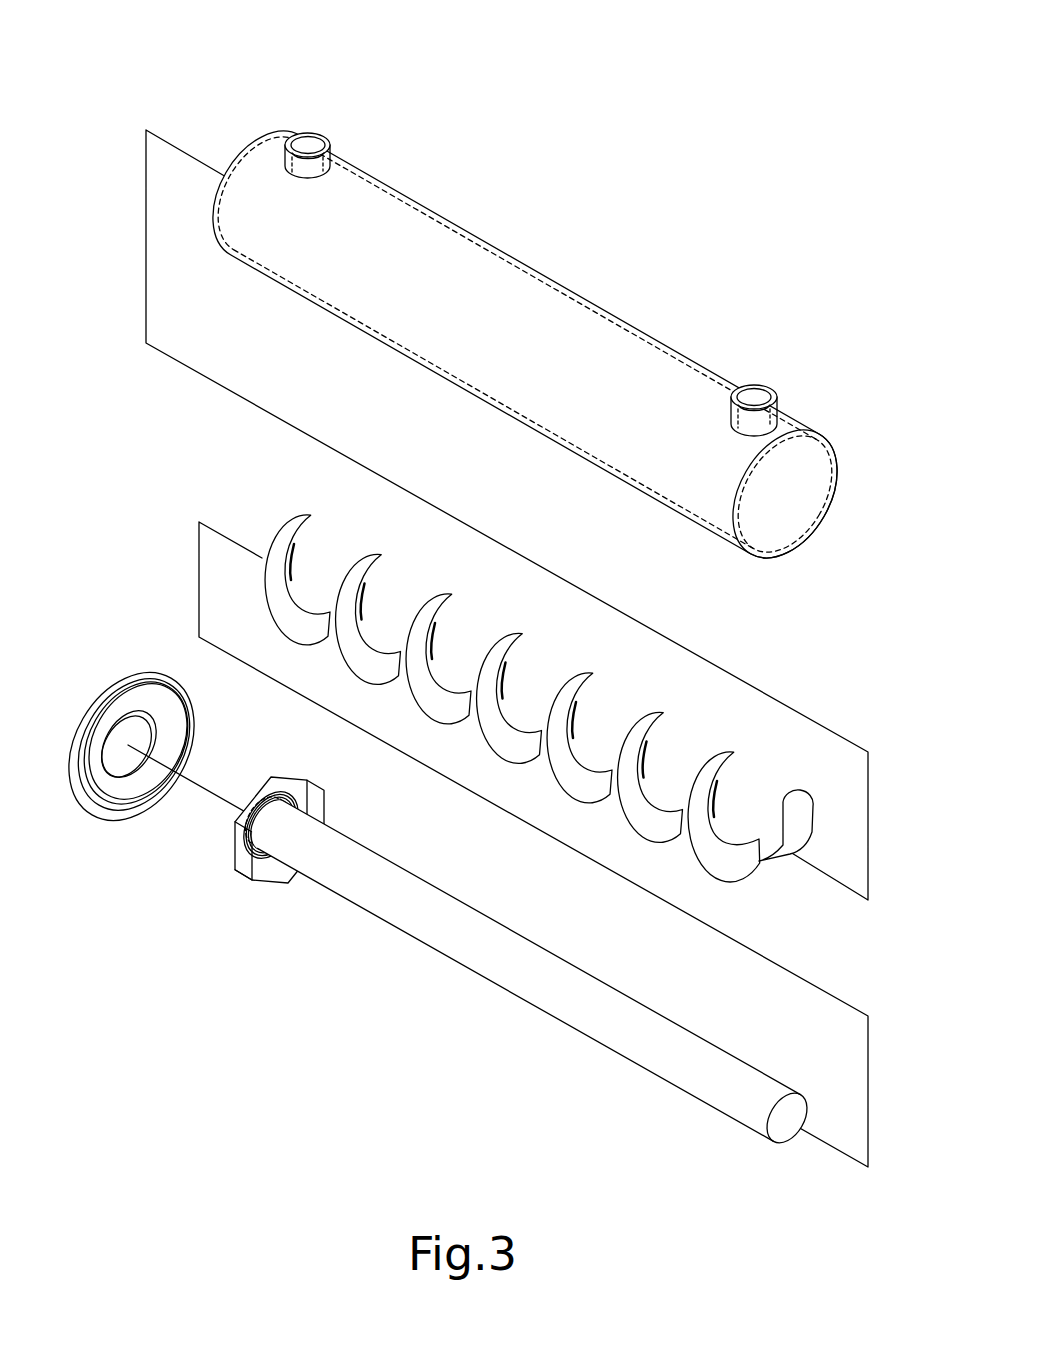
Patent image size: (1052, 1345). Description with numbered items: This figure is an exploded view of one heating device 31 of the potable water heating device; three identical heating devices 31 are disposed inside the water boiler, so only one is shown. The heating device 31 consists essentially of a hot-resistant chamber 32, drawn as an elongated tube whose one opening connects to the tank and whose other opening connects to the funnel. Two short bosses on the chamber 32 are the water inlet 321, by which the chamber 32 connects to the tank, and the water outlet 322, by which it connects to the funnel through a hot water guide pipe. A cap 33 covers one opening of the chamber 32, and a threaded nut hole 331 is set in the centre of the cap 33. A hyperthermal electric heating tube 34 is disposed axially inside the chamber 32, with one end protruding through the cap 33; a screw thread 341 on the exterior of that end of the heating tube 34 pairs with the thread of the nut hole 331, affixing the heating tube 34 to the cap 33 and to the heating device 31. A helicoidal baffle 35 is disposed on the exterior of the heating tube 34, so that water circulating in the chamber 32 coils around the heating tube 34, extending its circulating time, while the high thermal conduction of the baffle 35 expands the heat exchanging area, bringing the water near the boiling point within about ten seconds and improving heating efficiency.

The heating device 31 is at (158, 112).
The hot-resistant chamber 32 is at (536, 317).
The water inlet 321 is at (308, 143).
The water outlet 322 is at (754, 400).
The cap 33 is at (159, 763).
The nut hole 331 is at (146, 737).
The hyperthermal electric heating tube 34 is at (410, 928).
The screw thread 341 is at (264, 880).
The helicoidal baffle 35 is at (290, 542).